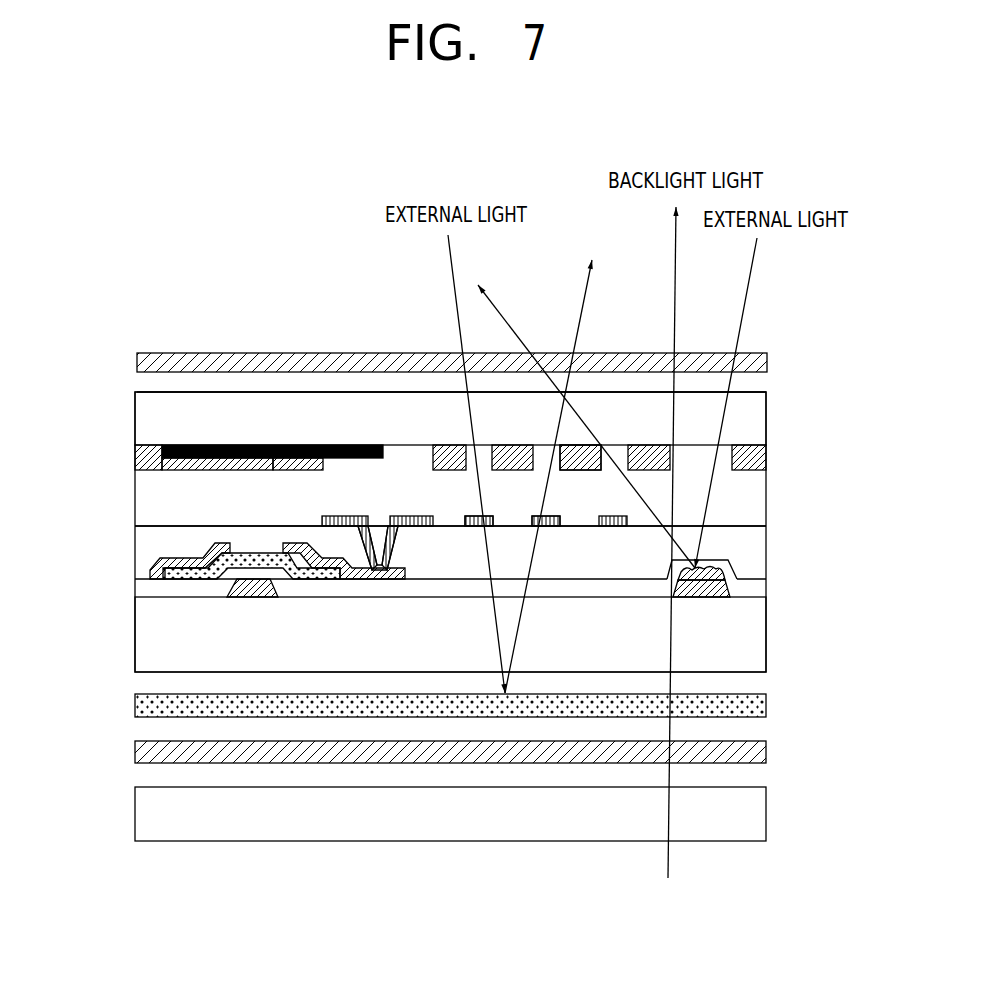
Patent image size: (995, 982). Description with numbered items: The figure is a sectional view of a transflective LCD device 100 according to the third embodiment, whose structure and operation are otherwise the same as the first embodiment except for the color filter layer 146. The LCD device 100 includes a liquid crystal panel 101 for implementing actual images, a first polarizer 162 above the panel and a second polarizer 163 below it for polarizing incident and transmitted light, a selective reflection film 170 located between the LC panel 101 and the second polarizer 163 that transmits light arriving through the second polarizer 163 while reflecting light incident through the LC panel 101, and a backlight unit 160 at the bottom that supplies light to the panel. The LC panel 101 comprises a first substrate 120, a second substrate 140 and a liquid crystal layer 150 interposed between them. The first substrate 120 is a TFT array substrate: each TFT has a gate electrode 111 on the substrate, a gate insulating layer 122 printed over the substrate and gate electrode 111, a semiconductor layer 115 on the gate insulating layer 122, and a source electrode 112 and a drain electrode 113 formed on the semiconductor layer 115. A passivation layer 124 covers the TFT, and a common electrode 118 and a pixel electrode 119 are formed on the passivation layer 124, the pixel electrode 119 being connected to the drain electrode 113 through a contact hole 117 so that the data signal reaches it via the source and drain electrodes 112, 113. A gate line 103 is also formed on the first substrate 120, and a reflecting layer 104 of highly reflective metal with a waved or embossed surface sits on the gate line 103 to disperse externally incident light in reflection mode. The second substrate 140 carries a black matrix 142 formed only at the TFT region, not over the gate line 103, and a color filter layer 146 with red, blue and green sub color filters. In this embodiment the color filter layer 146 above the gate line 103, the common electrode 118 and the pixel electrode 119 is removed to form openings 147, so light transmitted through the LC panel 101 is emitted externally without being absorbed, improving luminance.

The LCD device 100 is at (783, 325).
The liquid crystal panel 101 is at (772, 417).
The gate line 103 is at (708, 597).
The reflecting layer 104 is at (722, 565).
The gate electrode 111 is at (227, 585).
The source electrode 112 is at (180, 555).
The drain electrode 113 is at (283, 543).
The semiconductor layer 115 is at (163, 568).
The contact hole 117 is at (378, 522).
The common electrode 118 is at (477, 527).
The pixel electrode 119 is at (547, 527).
The first substrate 120 is at (140, 635).
The gate insulating layer 122 is at (752, 588).
The passivation layer 124 is at (748, 546).
The second substrate 140 is at (140, 420).
The black matrix 142 is at (323, 443).
The color filter layer 146 is at (445, 458).
The openings 147 is at (610, 445).
The liquid crystal layer 150 is at (140, 487).
The backlight unit 160 is at (138, 815).
The first polarizer 162 is at (140, 358).
The second polarizer 163 is at (135, 752).
The selective reflection film 170 is at (135, 703).